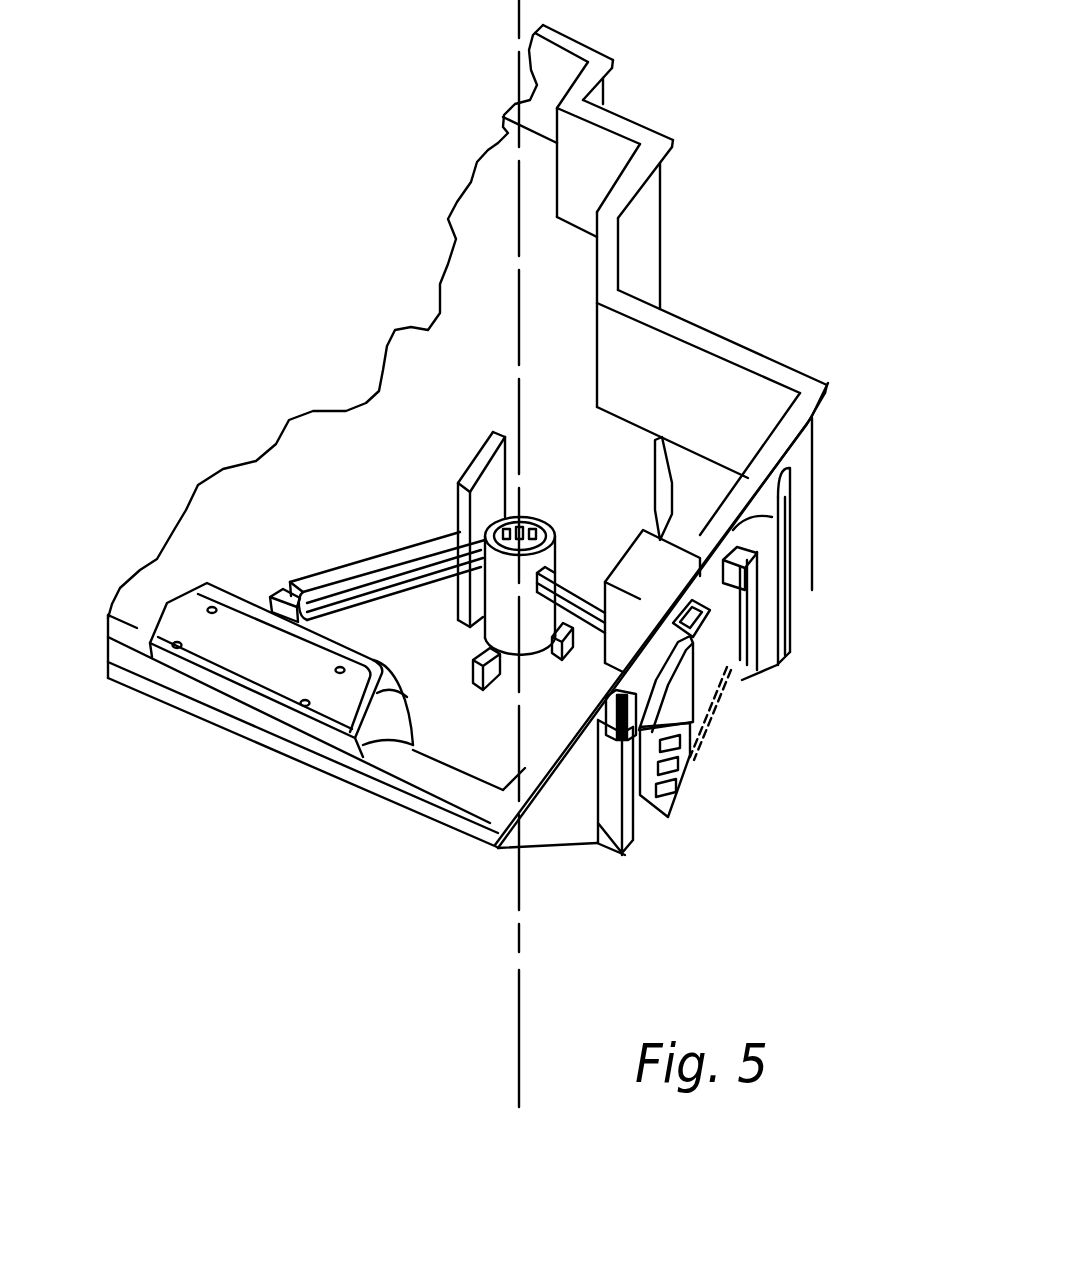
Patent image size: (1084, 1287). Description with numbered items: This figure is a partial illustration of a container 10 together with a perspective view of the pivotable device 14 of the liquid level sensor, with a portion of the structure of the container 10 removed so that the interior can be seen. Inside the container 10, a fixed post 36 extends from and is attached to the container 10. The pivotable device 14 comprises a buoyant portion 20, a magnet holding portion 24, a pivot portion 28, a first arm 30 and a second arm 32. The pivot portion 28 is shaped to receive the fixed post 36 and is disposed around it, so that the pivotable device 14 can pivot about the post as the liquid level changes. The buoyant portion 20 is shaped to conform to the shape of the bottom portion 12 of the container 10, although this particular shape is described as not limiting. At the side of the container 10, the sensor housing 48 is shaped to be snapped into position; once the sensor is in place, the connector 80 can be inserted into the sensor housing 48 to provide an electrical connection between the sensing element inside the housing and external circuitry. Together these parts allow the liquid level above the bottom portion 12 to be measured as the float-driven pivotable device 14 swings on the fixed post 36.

The container 10 is at (625, 305).
The bottom portion 12 is at (497, 848).
The pivotable device 14 is at (289, 582).
The buoyant portion 20 is at (255, 662).
The magnet holding portion 24 is at (672, 572).
The pivot portion 28 is at (495, 617).
The first arm 30 is at (362, 563).
The second arm 32 is at (661, 437).
The fixed post 36 is at (535, 523).
The sensor housing 48 is at (727, 667).
The connector 80 is at (690, 757).